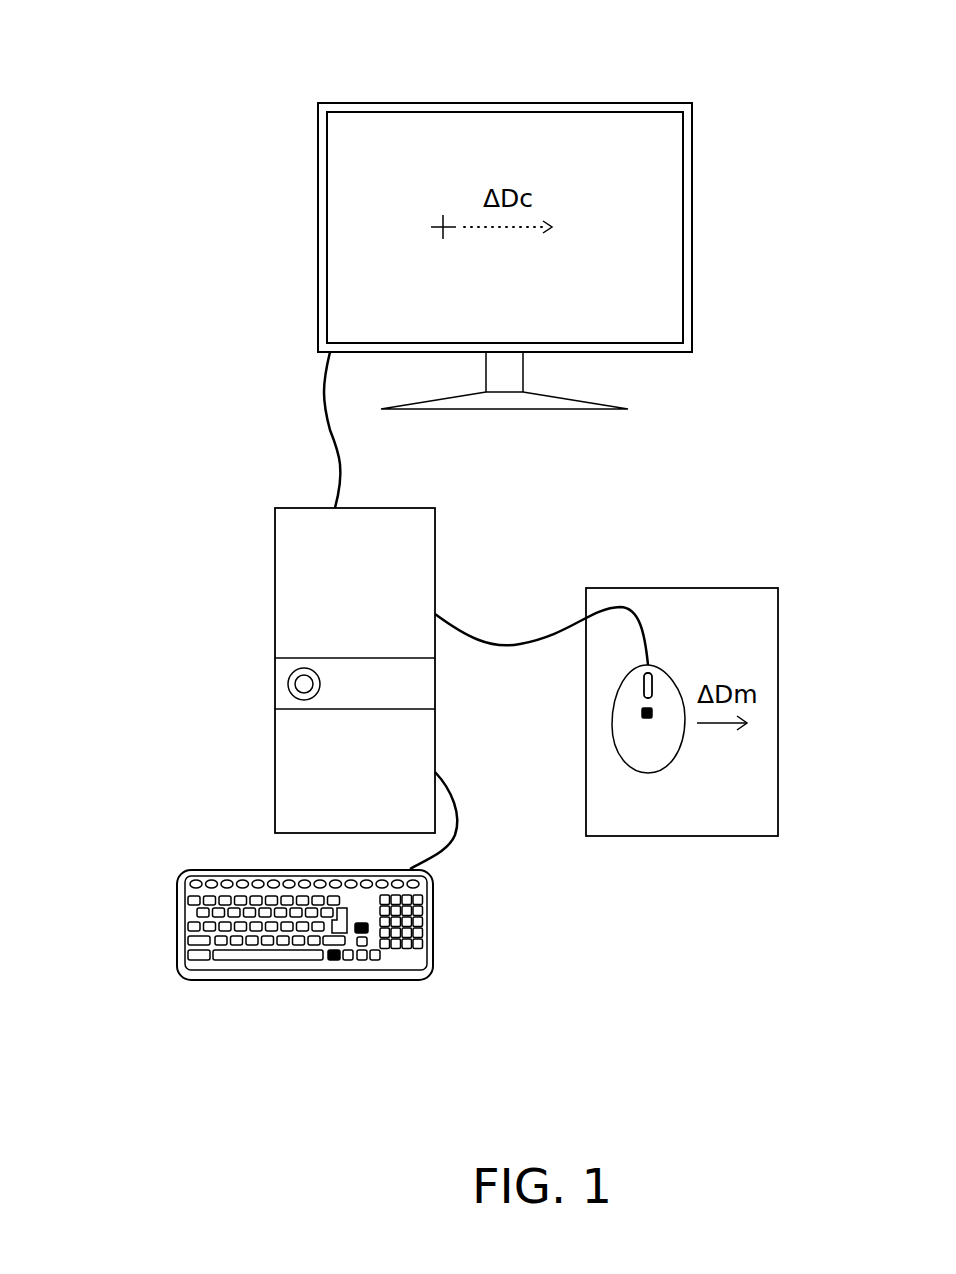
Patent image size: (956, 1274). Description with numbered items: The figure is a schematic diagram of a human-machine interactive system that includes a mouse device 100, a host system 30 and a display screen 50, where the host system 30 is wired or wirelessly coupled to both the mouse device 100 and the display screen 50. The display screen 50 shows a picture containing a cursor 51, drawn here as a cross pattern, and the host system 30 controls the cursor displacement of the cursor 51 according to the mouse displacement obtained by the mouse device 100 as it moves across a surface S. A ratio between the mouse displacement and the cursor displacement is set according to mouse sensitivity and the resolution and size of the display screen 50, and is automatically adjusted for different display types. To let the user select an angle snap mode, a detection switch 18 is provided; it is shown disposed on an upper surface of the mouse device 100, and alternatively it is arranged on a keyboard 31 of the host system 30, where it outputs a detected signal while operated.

The display screen 50 is at (582, 103).
The cursor 51 is at (443, 215).
The host system 30 is at (275, 652).
The keyboard 31 is at (177, 900).
The detection switch 18 is at (327, 962).
The mouse device 100 is at (650, 773).
The tracking surface S is at (707, 606).